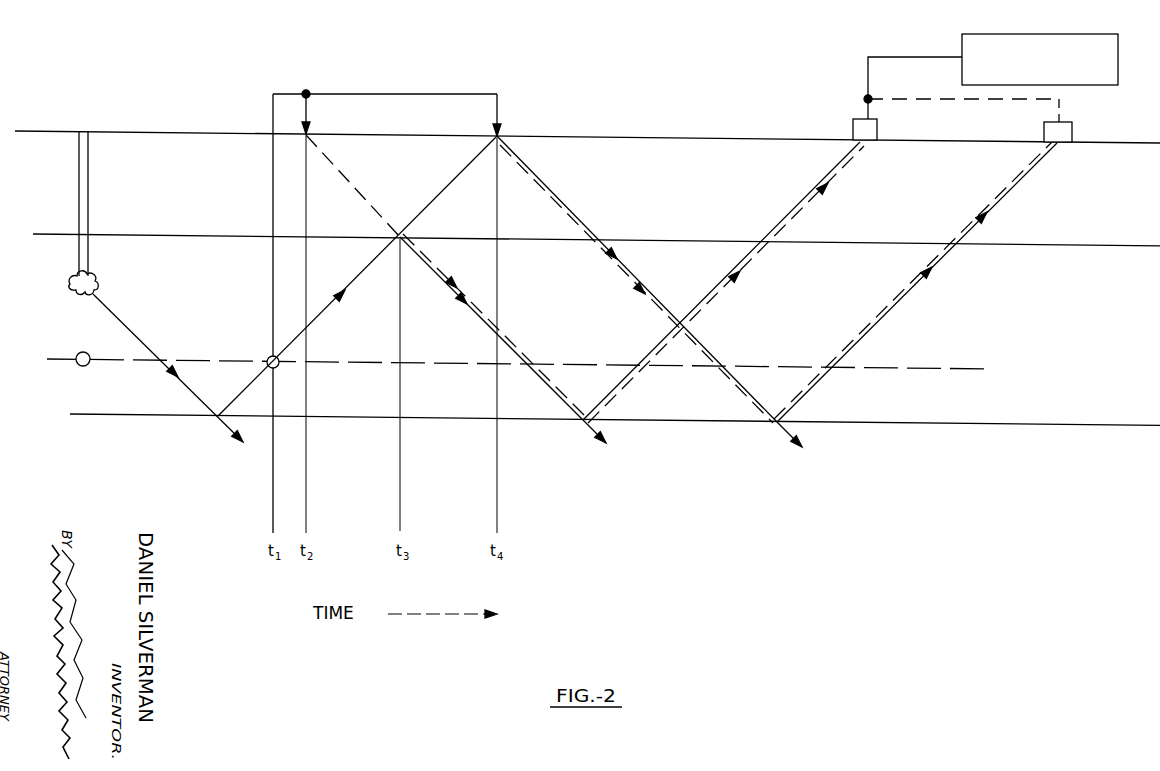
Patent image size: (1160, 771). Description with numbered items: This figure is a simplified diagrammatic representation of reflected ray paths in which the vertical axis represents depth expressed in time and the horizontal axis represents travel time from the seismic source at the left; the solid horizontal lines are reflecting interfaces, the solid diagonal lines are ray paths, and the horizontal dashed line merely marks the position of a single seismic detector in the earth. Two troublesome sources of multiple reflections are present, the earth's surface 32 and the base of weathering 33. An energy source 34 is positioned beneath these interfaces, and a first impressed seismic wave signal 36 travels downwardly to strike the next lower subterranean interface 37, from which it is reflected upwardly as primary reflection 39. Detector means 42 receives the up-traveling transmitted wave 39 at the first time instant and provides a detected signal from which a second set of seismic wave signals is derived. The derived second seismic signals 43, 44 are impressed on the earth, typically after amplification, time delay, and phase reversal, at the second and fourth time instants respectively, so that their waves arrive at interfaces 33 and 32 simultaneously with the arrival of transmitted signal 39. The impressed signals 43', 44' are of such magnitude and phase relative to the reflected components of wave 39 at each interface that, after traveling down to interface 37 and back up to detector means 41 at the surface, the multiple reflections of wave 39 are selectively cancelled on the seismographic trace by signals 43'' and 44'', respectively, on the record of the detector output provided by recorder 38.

The earth's surface 32 is at (192, 131).
The base of weathering 33 is at (202, 235).
The energy source 34 is at (65, 288).
The first impressed seismic wave signal 36 is at (130, 327).
The subterranean interface 37 is at (167, 418).
The recorder 38 is at (993, 76).
The primary reflection 39 is at (380, 254).
The detector means 41 is at (852, 130).
The detector means 42 is at (78, 368).
The second seismic signal 43 is at (351, 163).
The impressed signal 43' is at (504, 338).
The cancelling signal 43'' is at (726, 284).
The second seismic signal 44 is at (525, 115).
The impressed signal 44' is at (651, 296).
The cancelling signal 44'' is at (914, 279).